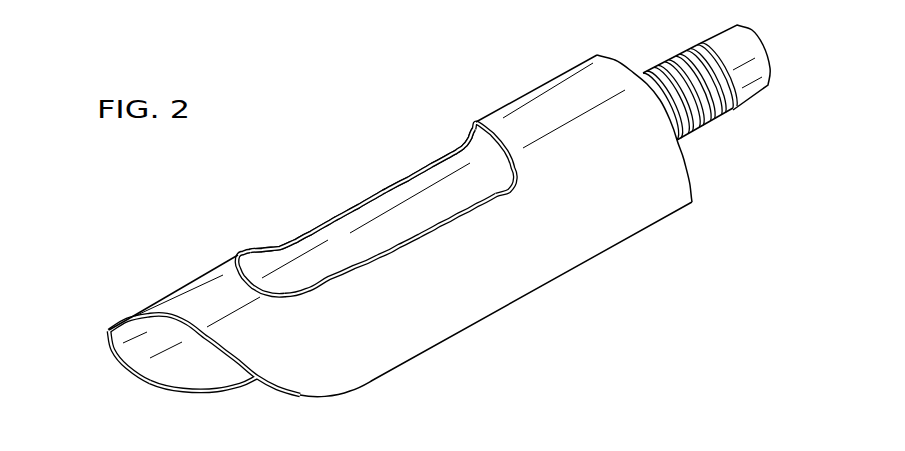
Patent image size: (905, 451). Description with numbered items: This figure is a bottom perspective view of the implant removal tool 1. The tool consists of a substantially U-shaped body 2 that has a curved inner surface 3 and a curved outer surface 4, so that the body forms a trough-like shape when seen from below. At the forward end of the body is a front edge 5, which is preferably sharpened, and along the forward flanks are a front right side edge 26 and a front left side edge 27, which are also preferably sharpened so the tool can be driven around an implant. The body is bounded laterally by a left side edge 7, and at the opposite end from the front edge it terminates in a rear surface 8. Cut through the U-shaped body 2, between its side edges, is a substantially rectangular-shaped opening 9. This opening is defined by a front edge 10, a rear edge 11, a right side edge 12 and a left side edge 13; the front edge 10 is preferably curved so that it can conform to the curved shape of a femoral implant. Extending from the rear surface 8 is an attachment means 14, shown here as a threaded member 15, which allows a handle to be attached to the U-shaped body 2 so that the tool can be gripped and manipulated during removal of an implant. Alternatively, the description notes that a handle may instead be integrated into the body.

The implant removal tool 1 is at (375, 118).
The substantially U-shaped body 2 is at (215, 390).
The curved inner surface 3 is at (182, 365).
The curved outer surface 4 is at (203, 303).
The front edge 5 is at (108, 332).
The left side edge 7 is at (545, 257).
The rear surface 8 is at (690, 190).
The substantially rectangular-shaped opening 9 is at (367, 202).
The front edge 10 is at (258, 250).
The rear edge 11 is at (473, 140).
The right side edge 12 is at (420, 235).
The left side edge 13 is at (413, 175).
The attachment means 14 is at (719, 123).
The threaded member 15 is at (733, 67).
The front right side edge 26 is at (130, 370).
The upper lip edge 27 is at (247, 365).